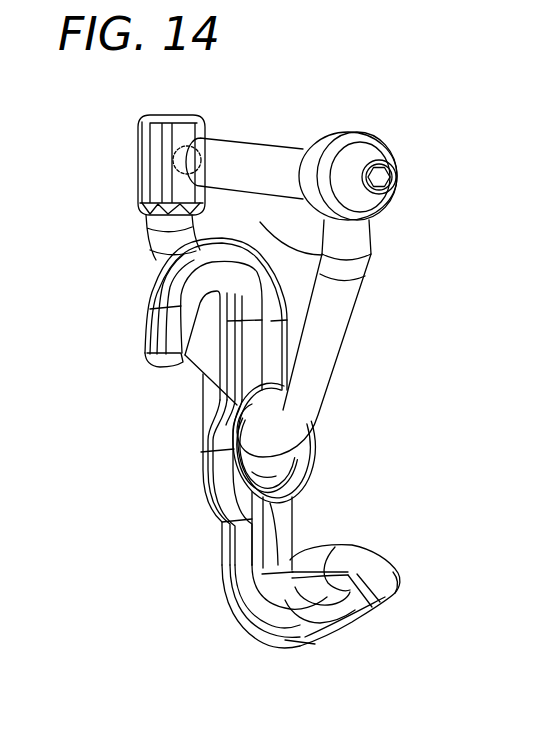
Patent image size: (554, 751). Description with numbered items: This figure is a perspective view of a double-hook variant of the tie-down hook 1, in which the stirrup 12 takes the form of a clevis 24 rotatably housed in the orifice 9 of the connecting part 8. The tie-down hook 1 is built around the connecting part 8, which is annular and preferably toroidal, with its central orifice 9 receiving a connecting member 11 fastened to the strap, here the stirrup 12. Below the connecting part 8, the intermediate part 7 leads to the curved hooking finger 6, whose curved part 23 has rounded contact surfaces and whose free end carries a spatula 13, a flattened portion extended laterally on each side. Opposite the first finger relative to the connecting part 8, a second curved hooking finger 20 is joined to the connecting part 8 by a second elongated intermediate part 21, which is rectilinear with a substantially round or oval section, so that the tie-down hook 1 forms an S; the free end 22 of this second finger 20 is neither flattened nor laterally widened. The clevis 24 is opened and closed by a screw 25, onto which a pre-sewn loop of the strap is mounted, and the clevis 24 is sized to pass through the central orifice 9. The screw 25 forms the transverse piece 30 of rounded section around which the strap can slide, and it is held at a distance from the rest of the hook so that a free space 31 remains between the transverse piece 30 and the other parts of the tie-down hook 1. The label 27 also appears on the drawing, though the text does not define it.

The tie-down hook 1 is at (102, 492).
The curved hooking finger 6 is at (190, 615).
The intermediate part 7 is at (198, 551).
The connecting part 8 is at (326, 443).
The orifice 9 is at (258, 470).
The connecting member 11 is at (384, 339).
The stirrup 12 is at (384, 339).
The spatula 13 is at (422, 595).
The second curved hooking finger 20 is at (113, 348).
The second elongated intermediate part 21 is at (221, 334).
The free end 22 is at (158, 375).
The curved part 23 is at (252, 655).
The clevis 24 is at (368, 331).
The screw 25 is at (246, 171).
The connection 27 is at (410, 580).
The transverse piece 30 is at (264, 136).
The free space 31 is at (363, 232).